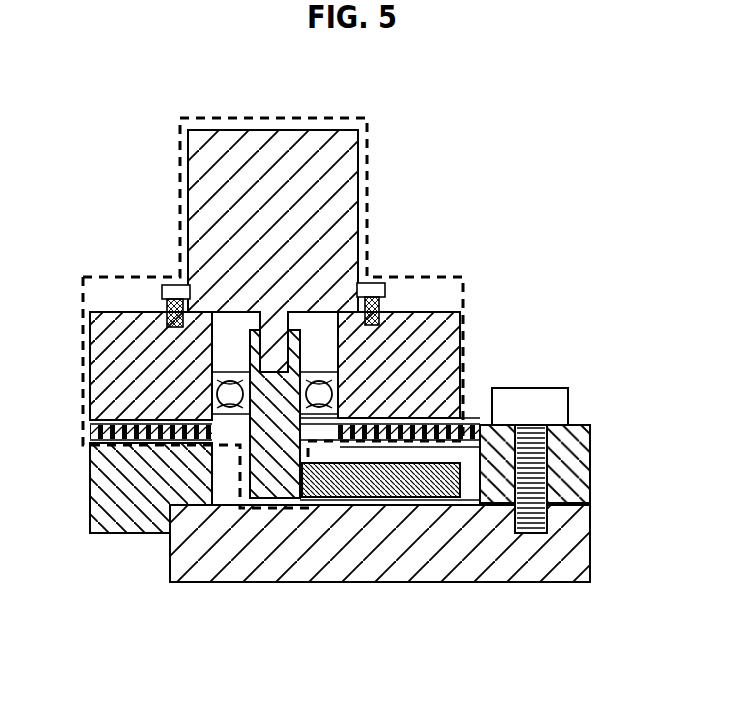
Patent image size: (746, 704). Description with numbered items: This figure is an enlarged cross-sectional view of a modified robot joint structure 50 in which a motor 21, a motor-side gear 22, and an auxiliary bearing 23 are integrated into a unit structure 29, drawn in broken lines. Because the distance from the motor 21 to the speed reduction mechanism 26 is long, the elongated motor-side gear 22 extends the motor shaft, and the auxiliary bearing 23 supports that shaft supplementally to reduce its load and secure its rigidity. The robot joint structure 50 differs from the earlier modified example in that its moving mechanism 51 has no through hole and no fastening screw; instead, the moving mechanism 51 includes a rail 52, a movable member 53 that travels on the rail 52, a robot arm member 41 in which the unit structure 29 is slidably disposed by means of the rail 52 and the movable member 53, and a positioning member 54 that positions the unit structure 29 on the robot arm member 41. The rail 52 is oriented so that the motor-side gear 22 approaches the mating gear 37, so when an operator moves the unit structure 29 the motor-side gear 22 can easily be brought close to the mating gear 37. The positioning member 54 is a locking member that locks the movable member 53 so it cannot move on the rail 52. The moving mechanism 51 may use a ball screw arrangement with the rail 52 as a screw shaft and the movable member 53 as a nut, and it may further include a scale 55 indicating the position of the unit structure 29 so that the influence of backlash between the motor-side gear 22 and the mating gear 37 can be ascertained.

The motor 21 is at (213, 176).
The motor-side gear 22 is at (272, 468).
The auxiliary bearing 23 is at (228, 394).
The speed reduction mechanism 26 is at (575, 527).
The unit structure 29 is at (369, 130).
The mating gear 37 is at (425, 480).
The robot arm member 41 is at (575, 468).
The robot joint structure 50 is at (604, 111).
The moving mechanism 51 is at (545, 258).
The rail 52 is at (445, 424).
The movable member 53 is at (410, 380).
The positioning member 54 is at (432, 412).
The scale 55 is at (520, 425).